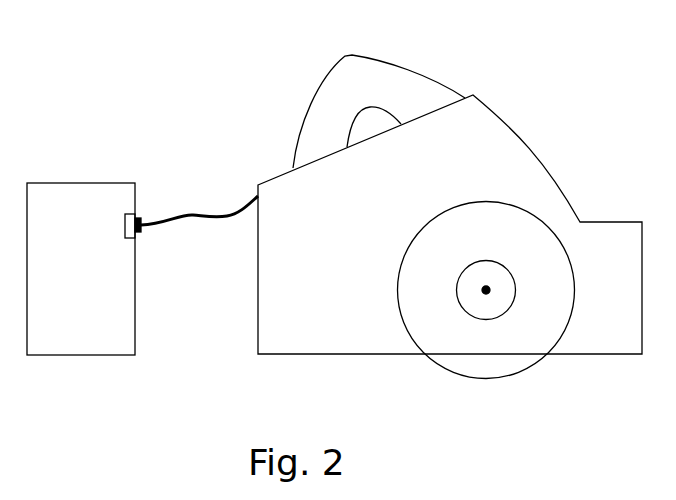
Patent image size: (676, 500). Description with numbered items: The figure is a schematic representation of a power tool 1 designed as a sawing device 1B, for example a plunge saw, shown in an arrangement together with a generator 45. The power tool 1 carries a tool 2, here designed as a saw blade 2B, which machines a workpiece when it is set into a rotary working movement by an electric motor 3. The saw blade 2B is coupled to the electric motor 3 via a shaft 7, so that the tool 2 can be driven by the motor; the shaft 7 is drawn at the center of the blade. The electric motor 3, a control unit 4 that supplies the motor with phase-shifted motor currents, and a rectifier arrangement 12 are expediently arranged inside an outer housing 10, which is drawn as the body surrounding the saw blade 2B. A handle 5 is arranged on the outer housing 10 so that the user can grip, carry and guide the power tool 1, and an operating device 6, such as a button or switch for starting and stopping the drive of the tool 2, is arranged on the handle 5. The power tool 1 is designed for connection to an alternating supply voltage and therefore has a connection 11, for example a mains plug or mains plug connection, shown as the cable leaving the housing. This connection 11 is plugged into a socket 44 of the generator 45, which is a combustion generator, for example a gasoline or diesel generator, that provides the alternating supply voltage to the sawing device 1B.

The power tool 1 is at (376, 210).
The sawing device 1B is at (245, 98).
The tool 2 is at (514, 304).
The saw blade 2B is at (510, 367).
The electric motor 3 is at (424, 335).
The control unit 4 is at (424, 335).
The rectifier arrangement 12 is at (480, 308).
The handle 5 is at (330, 98).
The operating device 6 is at (363, 119).
The shaft 7 is at (486, 284).
The outer housing 10 is at (553, 168).
The connection 11 is at (146, 219).
The socket 44 is at (125, 226).
The generator 45 is at (85, 174).